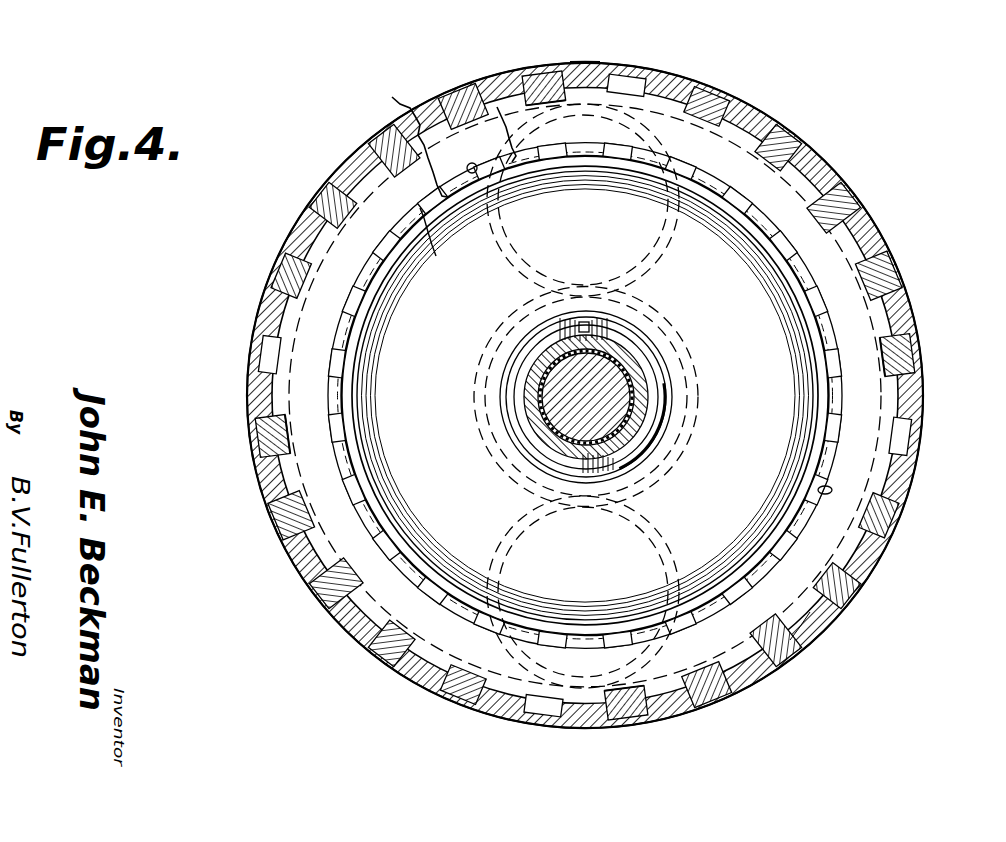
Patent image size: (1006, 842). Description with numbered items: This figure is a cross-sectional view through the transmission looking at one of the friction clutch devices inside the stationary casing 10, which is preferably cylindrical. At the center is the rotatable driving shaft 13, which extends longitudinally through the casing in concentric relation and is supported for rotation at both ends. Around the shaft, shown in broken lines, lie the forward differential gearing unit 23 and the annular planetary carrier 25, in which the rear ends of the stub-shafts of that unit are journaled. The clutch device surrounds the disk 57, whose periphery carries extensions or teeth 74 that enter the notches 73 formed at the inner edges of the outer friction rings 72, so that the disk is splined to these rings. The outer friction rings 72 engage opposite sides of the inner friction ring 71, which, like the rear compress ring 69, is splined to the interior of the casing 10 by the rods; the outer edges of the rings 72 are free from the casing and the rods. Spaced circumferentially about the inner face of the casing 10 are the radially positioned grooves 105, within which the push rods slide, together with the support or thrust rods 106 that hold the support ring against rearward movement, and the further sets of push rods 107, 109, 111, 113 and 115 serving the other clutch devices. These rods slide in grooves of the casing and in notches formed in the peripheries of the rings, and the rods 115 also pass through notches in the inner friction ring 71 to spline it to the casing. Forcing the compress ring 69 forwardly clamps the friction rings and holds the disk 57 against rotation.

The stationary casing 10 is at (823, 620).
The rotatable driving shaft 13 is at (615, 397).
The forward differential gearing unit 23 is at (652, 262).
The annular planetary carrier 25 is at (360, 310).
The disk 57 is at (583, 64).
The rear compress ring 69 is at (822, 540).
The inner friction ring 71 is at (404, 139).
The outer friction rings 72 is at (496, 148).
The notches 73 is at (468, 180).
The extensions or teeth 74 is at (432, 222).
The grooves 105 is at (672, 95).
The support or thrust rods 106 is at (628, 84).
The push rods 107 is at (755, 113).
The push rods 109 is at (800, 150).
The push rods 111 is at (850, 207).
The push rods 113 is at (883, 277).
The push rods 115 is at (540, 78).